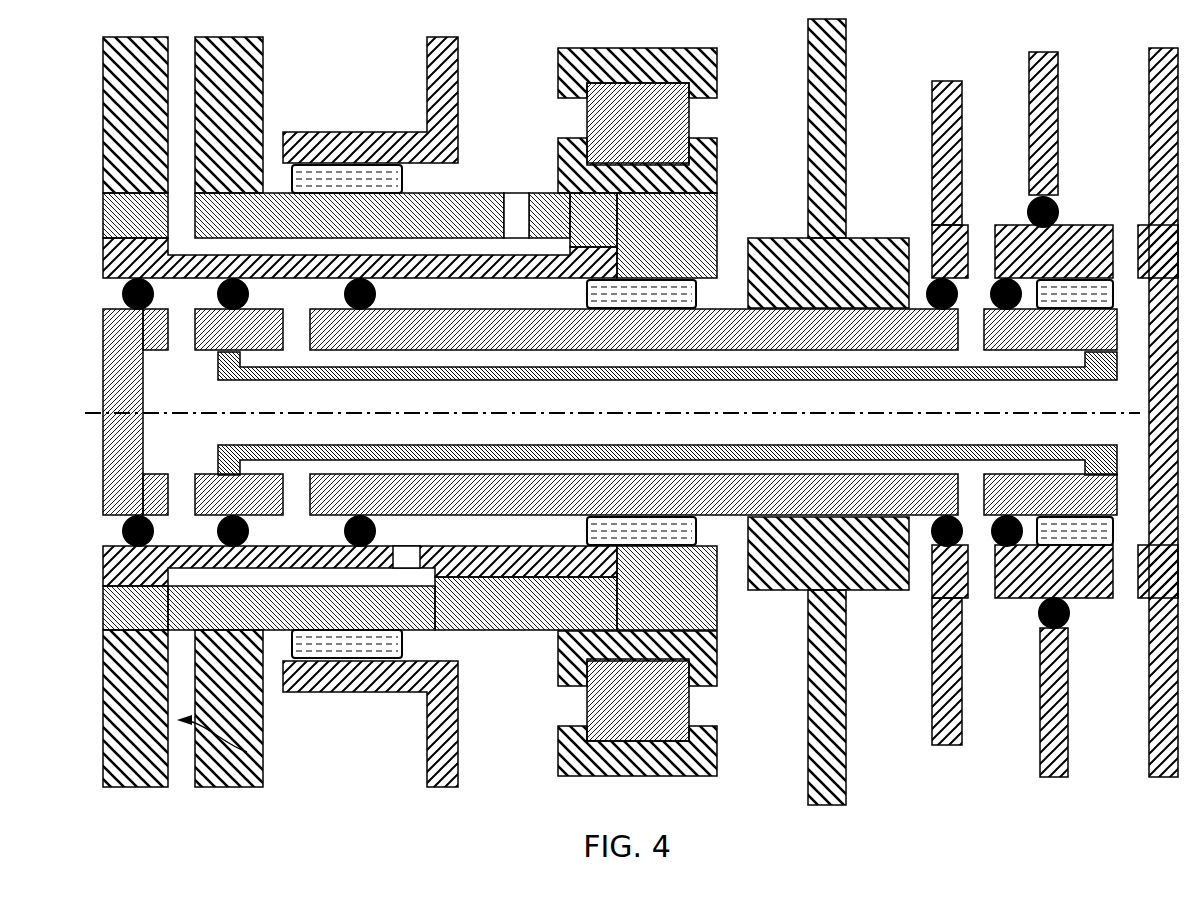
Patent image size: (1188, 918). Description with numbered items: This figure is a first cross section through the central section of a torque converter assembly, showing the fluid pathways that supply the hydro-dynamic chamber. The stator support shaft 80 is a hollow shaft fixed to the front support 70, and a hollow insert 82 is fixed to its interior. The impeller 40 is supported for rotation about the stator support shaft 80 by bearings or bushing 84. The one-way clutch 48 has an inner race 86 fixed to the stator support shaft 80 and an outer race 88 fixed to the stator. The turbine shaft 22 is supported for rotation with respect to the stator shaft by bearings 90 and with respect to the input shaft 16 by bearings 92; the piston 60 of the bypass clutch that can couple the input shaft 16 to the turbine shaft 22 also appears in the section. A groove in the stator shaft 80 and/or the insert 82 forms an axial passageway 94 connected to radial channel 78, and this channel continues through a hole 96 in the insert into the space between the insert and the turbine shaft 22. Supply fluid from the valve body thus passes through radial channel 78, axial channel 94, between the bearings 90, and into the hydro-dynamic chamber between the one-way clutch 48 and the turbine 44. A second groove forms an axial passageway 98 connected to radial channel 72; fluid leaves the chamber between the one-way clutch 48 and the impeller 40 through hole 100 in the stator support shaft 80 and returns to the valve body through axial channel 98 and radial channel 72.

The transmission input shaft 16 is at (1149, 102).
The turbine shaft 22 is at (760, 580).
The impeller 40 is at (458, 72).
The turbine 44 is at (848, 88).
The one-way clutch 48 is at (730, 105).
The piston 60 is at (1029, 58).
The front support 70 is at (265, 712).
The radial channel 72 is at (182, 82).
The radial channel 78 is at (265, 772).
The stator support shaft 80 is at (500, 633).
The hollow insert 82 is at (583, 578).
The bearings or bushing 84 is at (367, 132).
The inner race 86 is at (720, 168).
The outer race 88 is at (558, 72).
The bearings 90 is at (660, 513).
The bearings 92 is at (1070, 546).
The axial passageway 94 is at (374, 588).
The hole 96 is at (403, 556).
The axial passageway 98 is at (368, 240).
The hole 100 is at (517, 216).